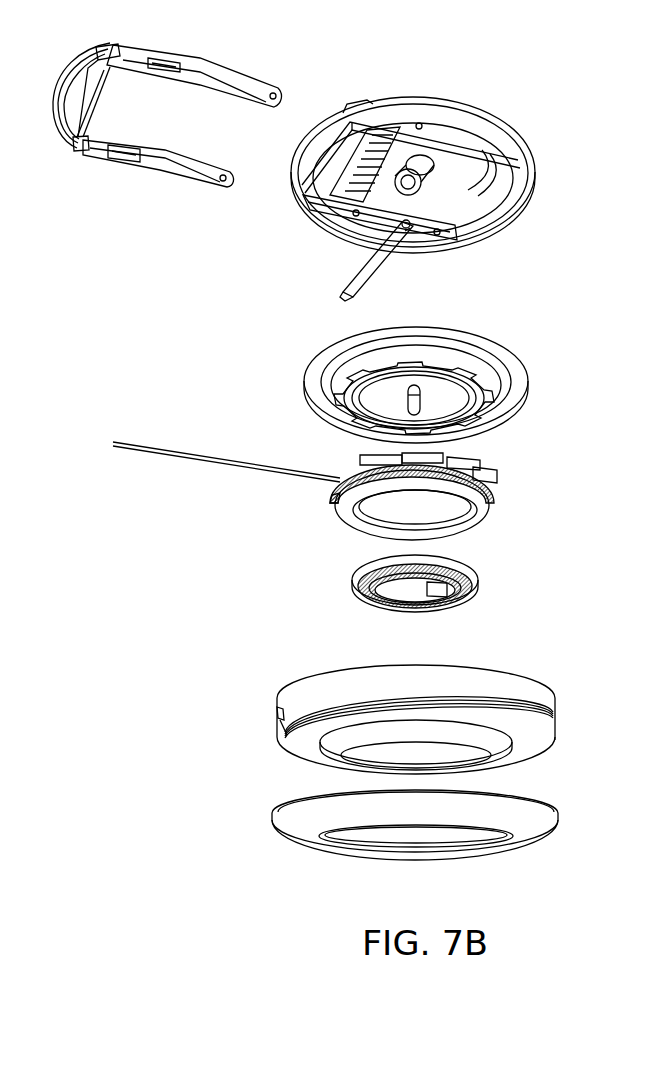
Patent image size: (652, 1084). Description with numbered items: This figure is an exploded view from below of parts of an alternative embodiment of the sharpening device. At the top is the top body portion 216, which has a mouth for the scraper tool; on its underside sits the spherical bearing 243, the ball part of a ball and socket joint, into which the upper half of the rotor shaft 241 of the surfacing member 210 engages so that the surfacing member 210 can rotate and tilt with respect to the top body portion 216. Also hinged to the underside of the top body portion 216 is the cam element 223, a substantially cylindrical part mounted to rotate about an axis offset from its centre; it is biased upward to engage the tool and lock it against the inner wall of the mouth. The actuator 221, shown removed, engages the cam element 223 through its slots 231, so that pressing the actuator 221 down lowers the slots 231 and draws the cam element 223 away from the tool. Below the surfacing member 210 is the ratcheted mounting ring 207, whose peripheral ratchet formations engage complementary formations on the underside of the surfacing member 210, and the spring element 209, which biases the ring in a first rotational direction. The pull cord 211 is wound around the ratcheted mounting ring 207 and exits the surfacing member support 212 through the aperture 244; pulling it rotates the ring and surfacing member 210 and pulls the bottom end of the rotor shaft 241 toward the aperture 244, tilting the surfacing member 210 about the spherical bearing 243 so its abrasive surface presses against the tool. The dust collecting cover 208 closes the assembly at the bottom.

The ratcheted mounting ring 207 is at (490, 500).
The dust collecting cover 208 is at (558, 815).
The spring element 209 is at (477, 602).
The surfacing member 210 is at (518, 383).
The pull cord 211 is at (215, 463).
The surfacing member support 212 is at (540, 687).
The top body portion 216 is at (514, 225).
The actuator 221 is at (85, 158).
The cam element 223 is at (363, 270).
The slots 231 is at (142, 170).
The rotor shaft 241 is at (423, 399).
The spherical bearing 243 is at (422, 164).
The aperture 244 is at (275, 712).